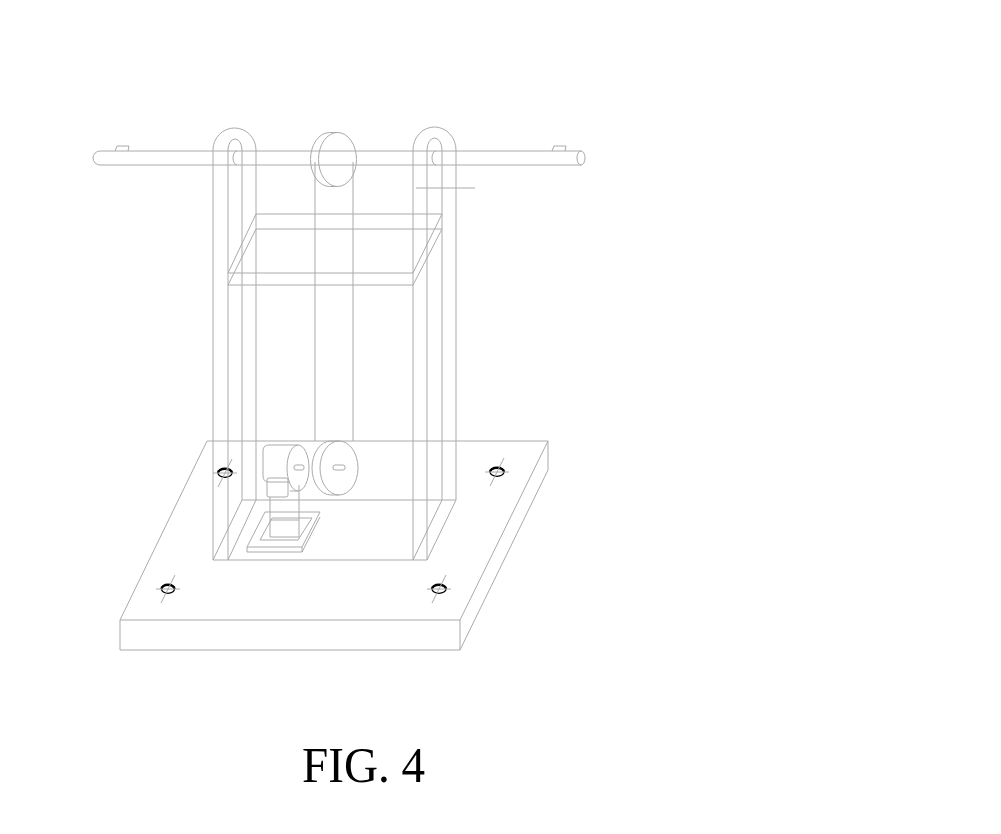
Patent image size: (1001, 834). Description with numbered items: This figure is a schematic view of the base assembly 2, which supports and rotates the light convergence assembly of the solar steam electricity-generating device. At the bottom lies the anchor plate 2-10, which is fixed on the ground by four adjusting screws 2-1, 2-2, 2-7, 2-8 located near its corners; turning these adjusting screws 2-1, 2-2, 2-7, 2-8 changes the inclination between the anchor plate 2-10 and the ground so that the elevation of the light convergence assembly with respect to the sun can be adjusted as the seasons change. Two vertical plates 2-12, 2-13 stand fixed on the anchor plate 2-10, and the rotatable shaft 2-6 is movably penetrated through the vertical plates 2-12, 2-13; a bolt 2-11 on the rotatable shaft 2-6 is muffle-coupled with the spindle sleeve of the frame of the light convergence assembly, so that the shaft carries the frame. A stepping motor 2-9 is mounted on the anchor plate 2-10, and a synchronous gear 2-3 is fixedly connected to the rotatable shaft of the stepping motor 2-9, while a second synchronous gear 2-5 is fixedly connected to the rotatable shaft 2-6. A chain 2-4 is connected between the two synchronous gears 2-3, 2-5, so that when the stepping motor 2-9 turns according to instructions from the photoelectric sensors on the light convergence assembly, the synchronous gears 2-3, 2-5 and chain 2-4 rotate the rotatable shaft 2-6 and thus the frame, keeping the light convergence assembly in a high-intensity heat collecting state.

The base assembly 2 is at (283, 255).
The adjusting screw 2-1 is at (448, 591).
The adjusting screw 2-2 is at (503, 475).
The synchronous gear 2-3 is at (343, 458).
The chain 2-4 is at (352, 403).
The synchronous gear 2-5 is at (335, 175).
The rotatable shaft 2-6 is at (510, 157).
The adjusting screw 2-7 is at (162, 589).
The adjusting screw 2-8 is at (218, 473).
The stepping motor 2-9 is at (278, 469).
The anchor plate 2-10 is at (440, 650).
The bolt 2-11 is at (565, 147).
The vertical plate 2-12 is at (441, 139).
The vertical plate 2-13 is at (220, 142).